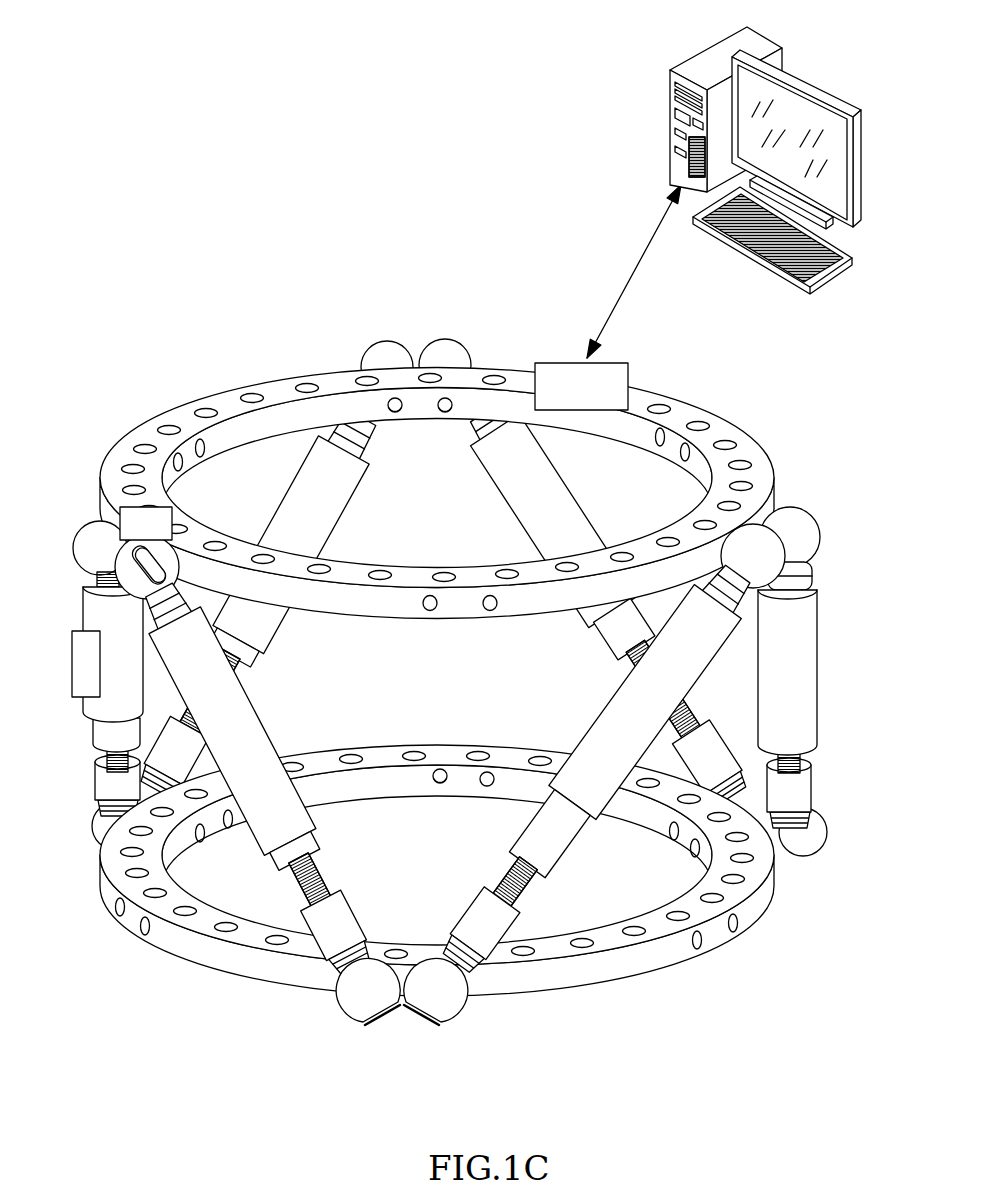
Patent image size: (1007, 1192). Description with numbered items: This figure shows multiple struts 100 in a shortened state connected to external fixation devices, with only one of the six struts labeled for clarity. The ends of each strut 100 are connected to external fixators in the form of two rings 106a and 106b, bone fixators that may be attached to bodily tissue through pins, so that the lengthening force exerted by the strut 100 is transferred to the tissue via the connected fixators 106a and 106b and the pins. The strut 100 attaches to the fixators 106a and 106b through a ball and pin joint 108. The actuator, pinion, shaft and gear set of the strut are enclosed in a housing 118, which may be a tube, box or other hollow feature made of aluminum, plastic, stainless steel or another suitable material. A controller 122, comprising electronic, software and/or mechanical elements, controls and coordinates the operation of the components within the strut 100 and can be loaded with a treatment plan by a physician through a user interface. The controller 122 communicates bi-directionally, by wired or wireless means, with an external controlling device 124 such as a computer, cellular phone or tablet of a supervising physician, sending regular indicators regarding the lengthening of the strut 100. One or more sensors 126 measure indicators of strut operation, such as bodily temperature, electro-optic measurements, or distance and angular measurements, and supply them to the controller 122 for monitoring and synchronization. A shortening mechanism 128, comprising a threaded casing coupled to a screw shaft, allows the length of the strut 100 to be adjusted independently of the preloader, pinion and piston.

The strut 100 is at (443, 698).
The ring 106a is at (270, 377).
The ring 106b is at (648, 958).
The ball and pin joint 108 is at (792, 508).
The housing 118 is at (515, 820).
The controller 122 is at (556, 362).
The external controlling device 124 is at (698, 54).
The sensor 126 is at (121, 507).
The shortening mechanism 128 is at (328, 928).